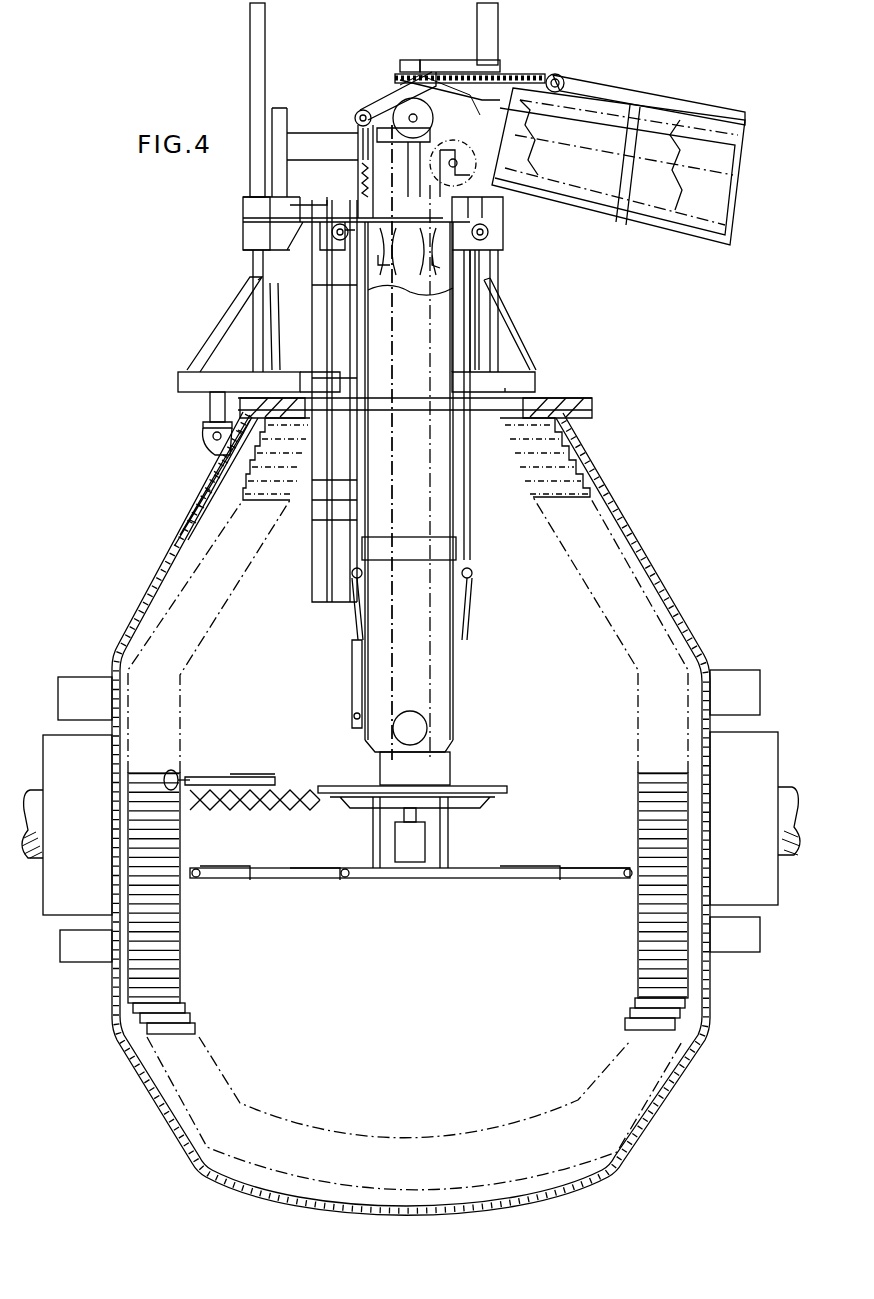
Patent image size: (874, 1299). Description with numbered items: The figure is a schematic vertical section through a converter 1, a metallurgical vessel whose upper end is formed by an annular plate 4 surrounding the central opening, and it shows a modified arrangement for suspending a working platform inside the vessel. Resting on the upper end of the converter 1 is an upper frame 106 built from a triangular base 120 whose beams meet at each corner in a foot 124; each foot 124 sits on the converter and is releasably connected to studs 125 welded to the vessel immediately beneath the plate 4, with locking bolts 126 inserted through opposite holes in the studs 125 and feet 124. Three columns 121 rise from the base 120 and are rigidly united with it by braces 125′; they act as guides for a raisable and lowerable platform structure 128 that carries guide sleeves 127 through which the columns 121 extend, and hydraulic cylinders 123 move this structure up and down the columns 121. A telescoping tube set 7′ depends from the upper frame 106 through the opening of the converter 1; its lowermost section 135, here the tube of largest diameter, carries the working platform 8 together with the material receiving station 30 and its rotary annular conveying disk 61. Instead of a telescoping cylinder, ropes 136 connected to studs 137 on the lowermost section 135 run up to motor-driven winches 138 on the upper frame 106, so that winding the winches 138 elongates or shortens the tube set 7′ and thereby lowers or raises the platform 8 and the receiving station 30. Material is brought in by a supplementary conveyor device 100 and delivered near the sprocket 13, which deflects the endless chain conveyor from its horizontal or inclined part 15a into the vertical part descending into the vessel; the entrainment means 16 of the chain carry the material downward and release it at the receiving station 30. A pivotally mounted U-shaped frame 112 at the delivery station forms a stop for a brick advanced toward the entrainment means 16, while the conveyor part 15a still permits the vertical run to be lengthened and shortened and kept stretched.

The converter 1 is at (652, 566).
The annular plate 4 is at (553, 405).
The tube set 7′ is at (455, 665).
The working platform 8 is at (455, 873).
The sprocket 13 is at (430, 118).
The horizontal conveyor part 15a is at (672, 222).
The entrainment means 16 is at (362, 150).
The receiving station 30 is at (355, 800).
The annular conveying disk 61 is at (480, 790).
The conveyor device 100 is at (572, 75).
The upper frame 106 is at (240, 214).
The U-shaped frame 112 is at (395, 92).
The triangular base 120 is at (224, 378).
The columns 121 is at (249, 71).
The hydraulic cylinders 123 is at (268, 292).
The foot 124 is at (210, 405).
The studs 125 is at (213, 455).
The braces 125′ is at (482, 306).
The locking bolts 126 is at (212, 436).
The guide sleeves 127 is at (245, 234).
The platform structure 128 is at (512, 341).
The lowermost section 135 is at (455, 695).
The ropes 136 is at (466, 505).
The studs 137 is at (352, 588).
The motor-driven winches 138 is at (345, 222).